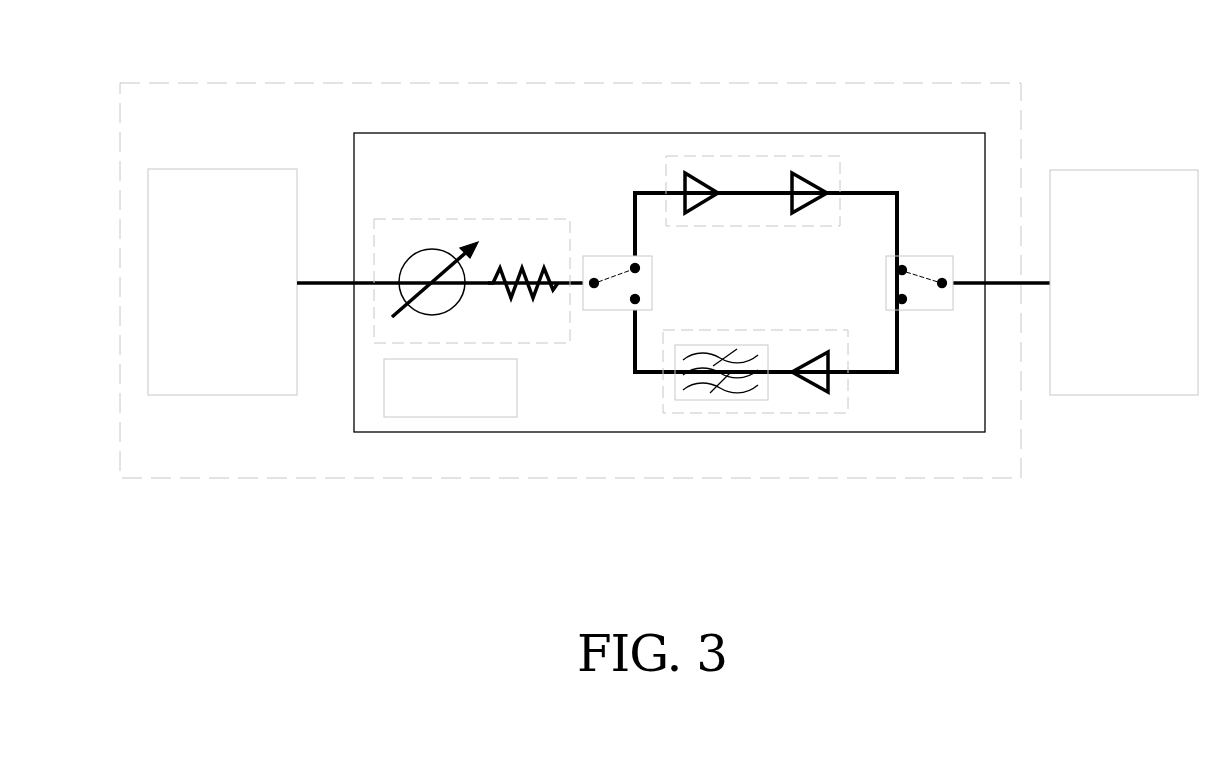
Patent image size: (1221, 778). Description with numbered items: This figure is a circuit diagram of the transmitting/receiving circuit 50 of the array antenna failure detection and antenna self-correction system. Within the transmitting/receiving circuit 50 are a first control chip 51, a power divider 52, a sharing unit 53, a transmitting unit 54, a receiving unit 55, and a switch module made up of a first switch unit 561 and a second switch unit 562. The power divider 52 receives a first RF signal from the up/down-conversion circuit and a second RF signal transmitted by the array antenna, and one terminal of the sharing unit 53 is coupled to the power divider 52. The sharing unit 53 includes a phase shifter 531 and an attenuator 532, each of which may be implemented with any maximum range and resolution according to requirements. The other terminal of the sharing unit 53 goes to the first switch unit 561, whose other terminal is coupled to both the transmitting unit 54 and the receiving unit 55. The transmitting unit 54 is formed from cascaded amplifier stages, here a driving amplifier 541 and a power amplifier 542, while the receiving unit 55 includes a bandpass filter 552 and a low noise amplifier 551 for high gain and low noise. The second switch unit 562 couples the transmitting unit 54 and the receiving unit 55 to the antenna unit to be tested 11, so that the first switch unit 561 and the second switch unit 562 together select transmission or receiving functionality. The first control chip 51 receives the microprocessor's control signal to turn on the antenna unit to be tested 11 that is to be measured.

The antenna unit to be tested 11 is at (1124, 170).
The transmitting/receiving circuit 50 is at (212, 478).
The first control chip 51 is at (518, 390).
The power divider 52 is at (222, 169).
The sharing unit 53 is at (387, 219).
The phase shifter 531 is at (432, 249).
The attenuator 532 is at (510, 268).
The transmitting unit 54 is at (673, 156).
The driving amplifier 541 is at (708, 183).
The power amplifier 542 is at (812, 183).
The receiving unit 55 is at (708, 413).
The low noise amplifier 551 is at (813, 355).
The bandpass filter 552 is at (722, 345).
The first switch unit 561 is at (608, 256).
The second switch unit 562 is at (920, 256).